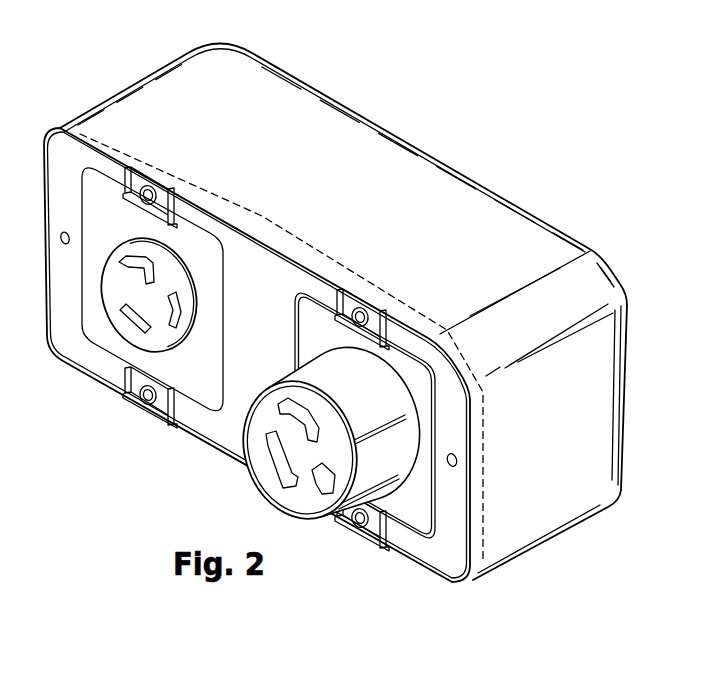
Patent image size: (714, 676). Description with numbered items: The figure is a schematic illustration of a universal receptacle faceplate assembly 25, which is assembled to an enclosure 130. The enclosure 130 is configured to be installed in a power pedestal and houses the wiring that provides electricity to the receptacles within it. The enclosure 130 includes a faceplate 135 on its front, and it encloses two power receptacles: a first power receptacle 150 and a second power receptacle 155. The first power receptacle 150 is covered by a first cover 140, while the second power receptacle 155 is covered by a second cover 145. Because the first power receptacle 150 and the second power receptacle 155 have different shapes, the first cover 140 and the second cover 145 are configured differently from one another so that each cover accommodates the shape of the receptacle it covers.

The universal receptacle faceplate assembly 25 is at (113, 70).
The enclosure 130 is at (515, 517).
The faceplate 135 is at (453, 553).
The first cover 140 is at (403, 513).
The second cover 145 is at (208, 387).
The first power receptacle 150 is at (298, 483).
The second power receptacle 155 is at (127, 297).